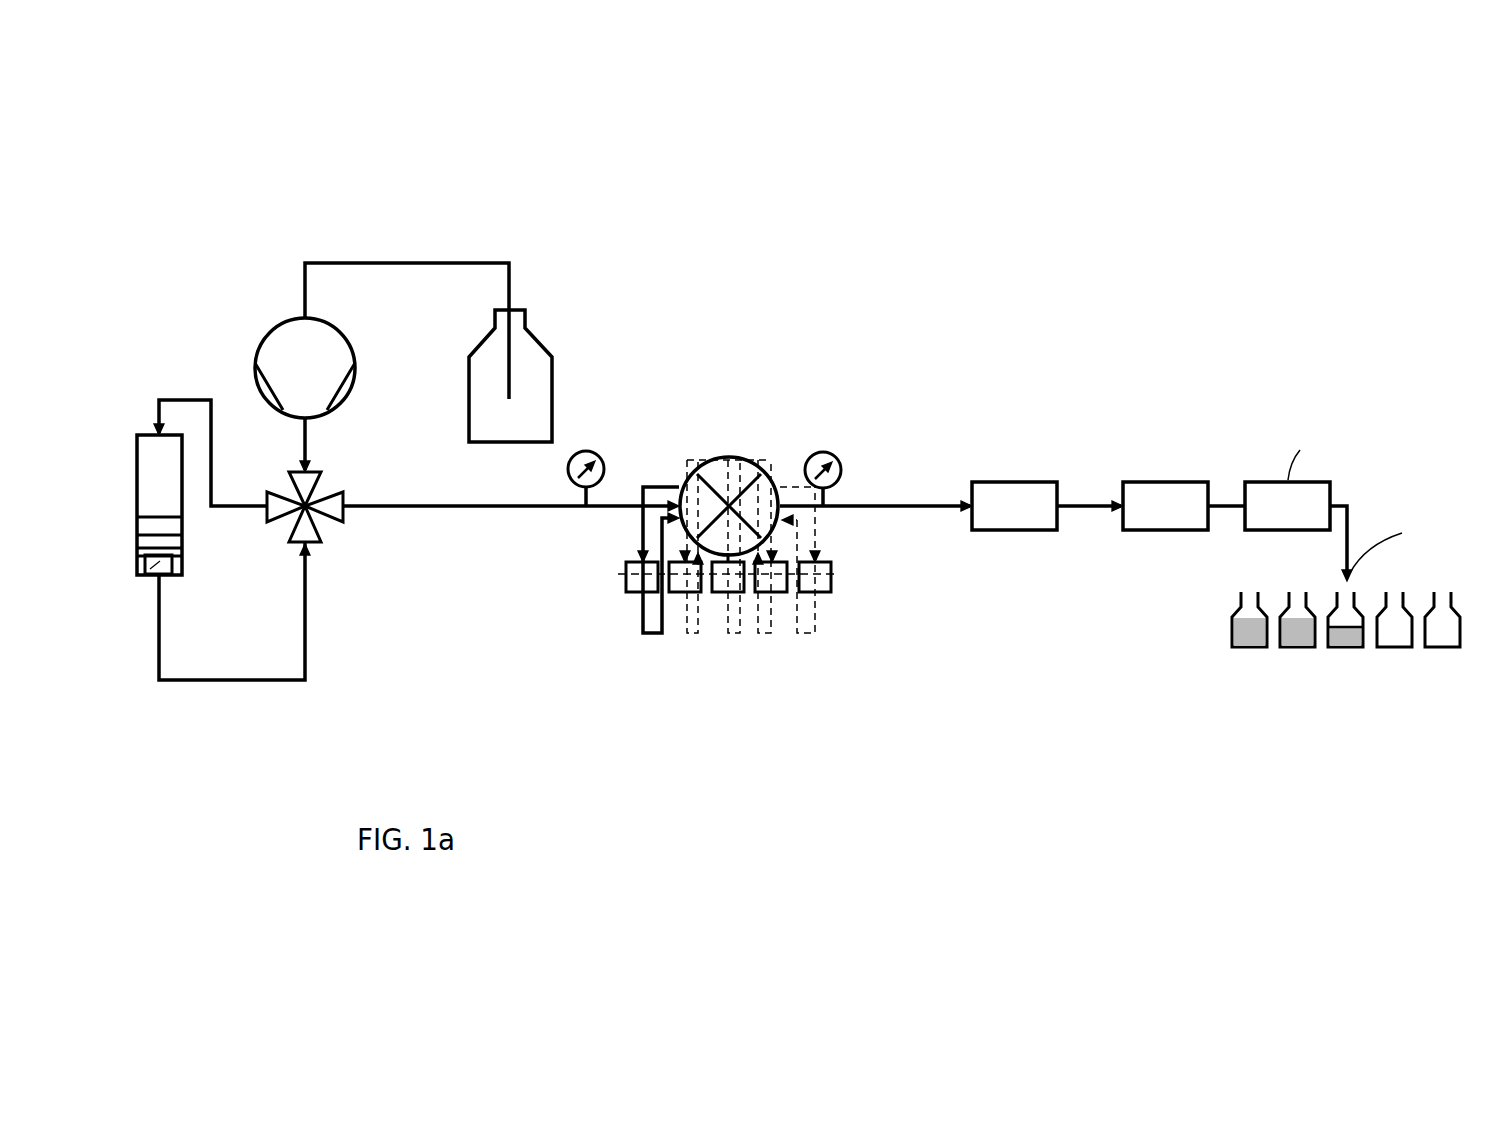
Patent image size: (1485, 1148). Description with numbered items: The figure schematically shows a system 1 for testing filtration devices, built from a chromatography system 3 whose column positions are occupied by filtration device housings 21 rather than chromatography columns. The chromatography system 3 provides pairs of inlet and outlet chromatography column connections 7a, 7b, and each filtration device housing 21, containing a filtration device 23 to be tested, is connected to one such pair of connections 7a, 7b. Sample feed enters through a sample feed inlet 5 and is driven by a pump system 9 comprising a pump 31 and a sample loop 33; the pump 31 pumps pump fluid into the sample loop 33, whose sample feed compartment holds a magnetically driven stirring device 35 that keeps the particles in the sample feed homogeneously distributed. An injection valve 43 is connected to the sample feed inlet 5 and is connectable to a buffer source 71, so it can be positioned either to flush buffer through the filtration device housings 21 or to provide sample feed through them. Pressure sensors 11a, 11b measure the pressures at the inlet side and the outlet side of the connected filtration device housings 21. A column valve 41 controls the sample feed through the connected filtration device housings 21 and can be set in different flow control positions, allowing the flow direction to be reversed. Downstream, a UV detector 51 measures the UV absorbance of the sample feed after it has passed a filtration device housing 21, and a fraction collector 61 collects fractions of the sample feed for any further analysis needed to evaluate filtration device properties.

The system 1 is at (1001, 258).
The chromatography system 3 is at (686, 238).
The sample feed inlet 5 is at (162, 578).
The inlet chromatography column connection 7a is at (638, 553).
The outlet chromatography column connection 7b is at (643, 598).
The pump system 9 is at (220, 277).
The pressure sensor 11a is at (591, 452).
The pressure sensor 11b is at (823, 452).
The filtration device housing 21 is at (760, 594).
The filtration device 23 is at (627, 573).
The pump 31 is at (337, 327).
The sample loop 33 is at (122, 438).
The magnetically driven stirring device 35 is at (145, 577).
The column valve 41 is at (722, 457).
The injection valve 43 is at (327, 472).
The UV detector 51 is at (1012, 480).
The fraction collector 61 is at (1172, 480).
The buffer source 71 is at (527, 328).